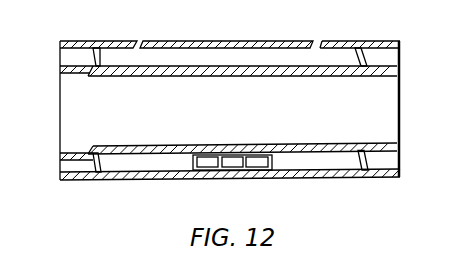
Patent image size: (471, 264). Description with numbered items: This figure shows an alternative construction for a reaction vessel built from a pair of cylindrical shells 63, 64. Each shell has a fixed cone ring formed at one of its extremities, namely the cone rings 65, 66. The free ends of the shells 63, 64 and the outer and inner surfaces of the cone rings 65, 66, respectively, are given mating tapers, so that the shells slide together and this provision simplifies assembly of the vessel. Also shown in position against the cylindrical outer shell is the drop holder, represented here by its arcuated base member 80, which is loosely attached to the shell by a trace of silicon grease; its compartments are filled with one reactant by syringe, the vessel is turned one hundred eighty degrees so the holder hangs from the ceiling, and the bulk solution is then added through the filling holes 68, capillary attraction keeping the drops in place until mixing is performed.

The cylindrical shell 63 is at (289, 78).
The cylindrical shell 64 is at (153, 185).
The cone ring 65 is at (401, 61).
The cone ring 66 is at (62, 40).
The filling holes 68 is at (142, 40).
The arcuated base member 80 is at (230, 170).